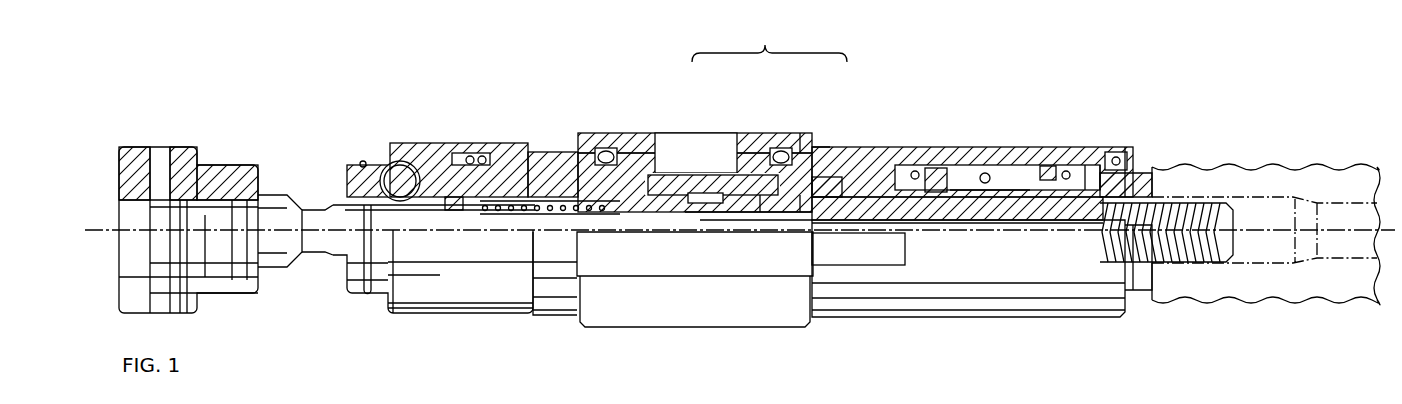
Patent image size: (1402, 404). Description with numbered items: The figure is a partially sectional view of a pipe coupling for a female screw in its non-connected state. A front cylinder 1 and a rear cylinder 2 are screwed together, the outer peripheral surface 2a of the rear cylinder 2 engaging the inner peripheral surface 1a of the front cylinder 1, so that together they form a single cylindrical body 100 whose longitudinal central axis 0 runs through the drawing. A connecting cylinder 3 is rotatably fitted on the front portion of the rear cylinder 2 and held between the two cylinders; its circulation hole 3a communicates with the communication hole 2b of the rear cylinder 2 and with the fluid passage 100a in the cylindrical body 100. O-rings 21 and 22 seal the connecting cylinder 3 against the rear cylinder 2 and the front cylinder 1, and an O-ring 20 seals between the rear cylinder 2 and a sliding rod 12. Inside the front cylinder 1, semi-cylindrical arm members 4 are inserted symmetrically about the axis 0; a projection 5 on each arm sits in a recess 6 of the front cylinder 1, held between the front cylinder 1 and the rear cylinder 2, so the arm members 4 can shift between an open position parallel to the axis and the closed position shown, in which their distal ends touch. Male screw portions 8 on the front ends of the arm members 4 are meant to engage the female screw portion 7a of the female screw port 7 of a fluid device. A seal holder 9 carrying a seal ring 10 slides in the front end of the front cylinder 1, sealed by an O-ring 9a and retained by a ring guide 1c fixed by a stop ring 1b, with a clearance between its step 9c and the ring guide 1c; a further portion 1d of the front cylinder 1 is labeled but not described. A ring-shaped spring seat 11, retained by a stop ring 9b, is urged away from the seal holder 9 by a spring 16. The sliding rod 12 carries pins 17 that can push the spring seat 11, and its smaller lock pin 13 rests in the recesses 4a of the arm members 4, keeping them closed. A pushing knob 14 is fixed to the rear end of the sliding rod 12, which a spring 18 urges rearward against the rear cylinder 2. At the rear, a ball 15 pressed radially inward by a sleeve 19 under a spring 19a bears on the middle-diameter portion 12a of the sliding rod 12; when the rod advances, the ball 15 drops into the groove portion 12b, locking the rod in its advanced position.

The cylindrical body 100 is at (769, 43).
The front cylinder 1 is at (848, 150).
The inner peripheral surface 1a is at (806, 145).
The stop ring 1b is at (1128, 165).
The ring guide 1c is at (1112, 158).
The housing inner chamber 1d is at (897, 162).
The rear cylinder 2 is at (672, 172).
The outer peripheral surface 2a is at (783, 203).
The communication hole 2b is at (703, 210).
The connecting cylinder 3 is at (620, 142).
The circulation hole 3a is at (712, 143).
The arm members 4 is at (925, 205).
The recesses 4a is at (960, 212).
The projection 5 is at (863, 190).
The recess 6 is at (813, 185).
The female screw port 7 is at (1302, 167).
The female screw portion 7a is at (1250, 195).
The male screw portions 8 is at (1188, 263).
The seal holder 9 is at (1093, 152).
The O-ring 9a is at (1046, 165).
The stop ring 9b is at (918, 168).
The step 9c is at (1066, 160).
The seal ring 10 is at (1148, 180).
The ring-shaped spring seat 11 is at (944, 175).
The sliding rod 12 is at (516, 228).
The middle-diameter portion 12a is at (372, 290).
The groove portion 12b is at (318, 243).
The lock pin 13 is at (1062, 225).
The pushing knob 14 is at (220, 164).
The ball 15 is at (392, 172).
The spring 16 is at (996, 195).
The pins 17 is at (838, 240).
The spring 18 is at (617, 210).
The sleeve 19 is at (427, 143).
The spring 19a is at (471, 160).
The O-ring 20 is at (457, 210).
The O-ring 21 is at (588, 135).
The O-ring 22 is at (773, 138).
The fluid passage 100a is at (728, 213).
The longitudinal central axis 0 is at (1015, 232).